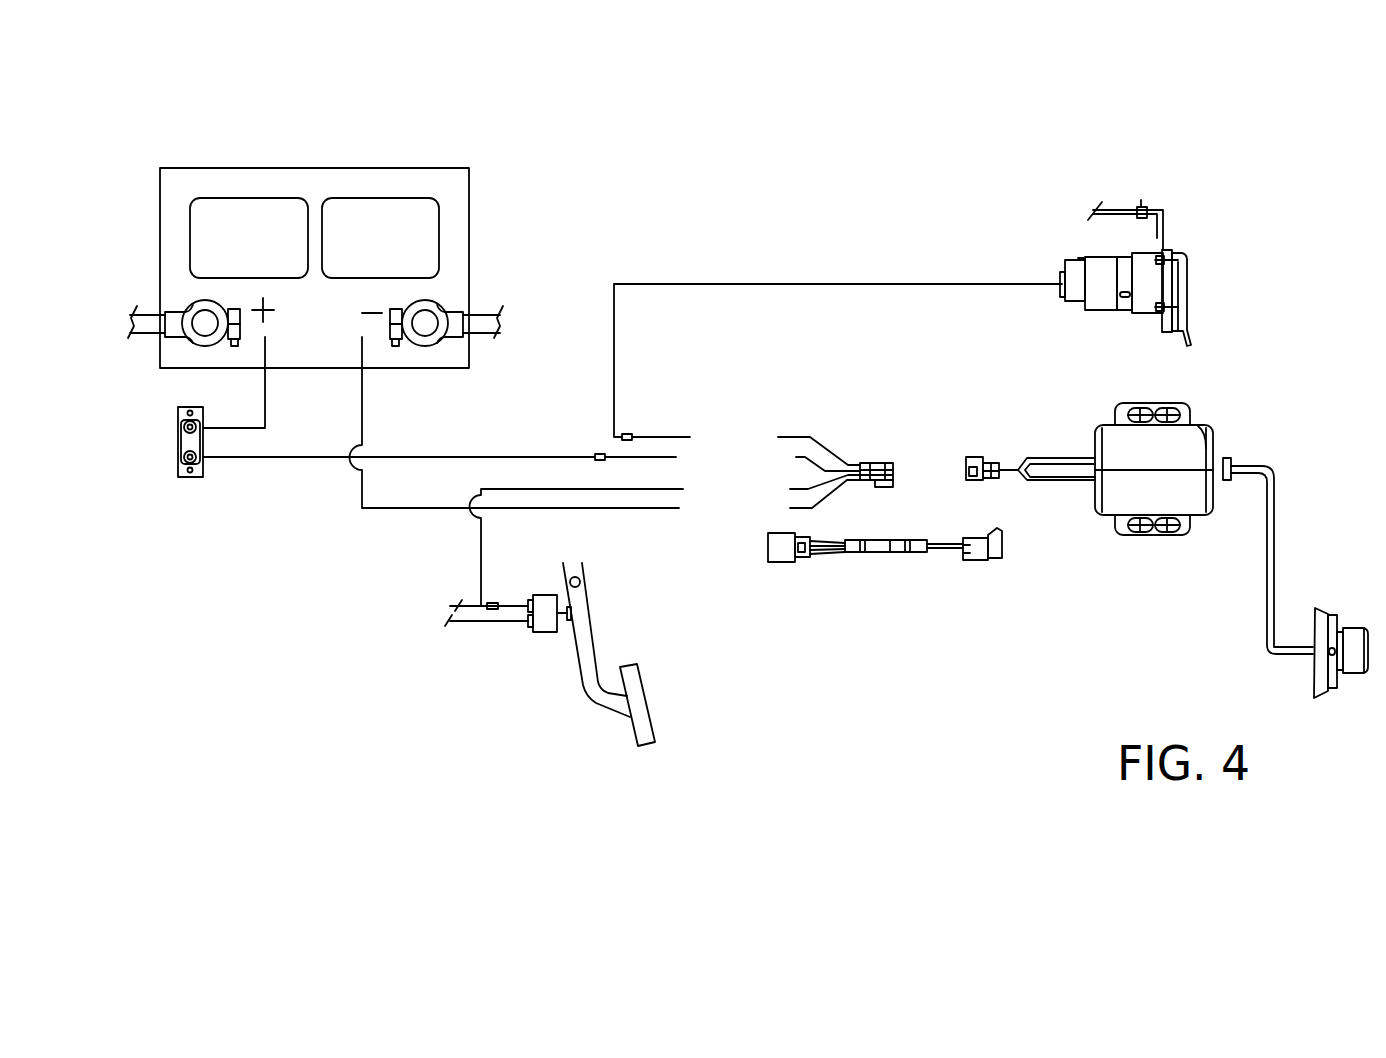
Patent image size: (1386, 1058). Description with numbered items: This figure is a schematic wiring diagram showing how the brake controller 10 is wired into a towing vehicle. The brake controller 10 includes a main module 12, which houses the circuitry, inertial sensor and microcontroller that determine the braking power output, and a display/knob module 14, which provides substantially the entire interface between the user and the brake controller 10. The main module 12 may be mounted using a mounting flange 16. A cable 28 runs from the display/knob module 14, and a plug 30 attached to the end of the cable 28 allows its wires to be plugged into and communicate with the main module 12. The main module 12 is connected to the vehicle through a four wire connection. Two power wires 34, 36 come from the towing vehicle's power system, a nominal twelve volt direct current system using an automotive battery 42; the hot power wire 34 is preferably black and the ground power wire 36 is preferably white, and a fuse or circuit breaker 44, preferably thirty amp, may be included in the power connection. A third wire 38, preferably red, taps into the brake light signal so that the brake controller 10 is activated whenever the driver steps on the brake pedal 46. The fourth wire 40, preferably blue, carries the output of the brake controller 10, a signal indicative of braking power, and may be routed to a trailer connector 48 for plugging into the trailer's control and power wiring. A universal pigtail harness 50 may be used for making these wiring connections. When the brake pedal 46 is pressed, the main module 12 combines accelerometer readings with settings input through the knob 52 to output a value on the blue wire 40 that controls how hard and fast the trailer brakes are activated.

The brake controller 10 is at (1287, 395).
The main module 12 is at (1190, 448).
The display/knob module 14 is at (1326, 562).
The mounting flange 16 is at (1122, 412).
The cable 28 is at (1275, 542).
The plug 30 is at (1225, 483).
The hot power wire 34 is at (433, 456).
The ground power wire 36 is at (400, 507).
The third wire 38 is at (538, 490).
The fourth wire 40 is at (747, 287).
The automotive battery 42 is at (455, 238).
The circuit breaker 44 is at (185, 440).
The brake pedal 46 is at (633, 688).
The trailer connector 48 is at (1097, 265).
The universal pigtail harness 50 is at (897, 553).
The knob 52 is at (1357, 667).